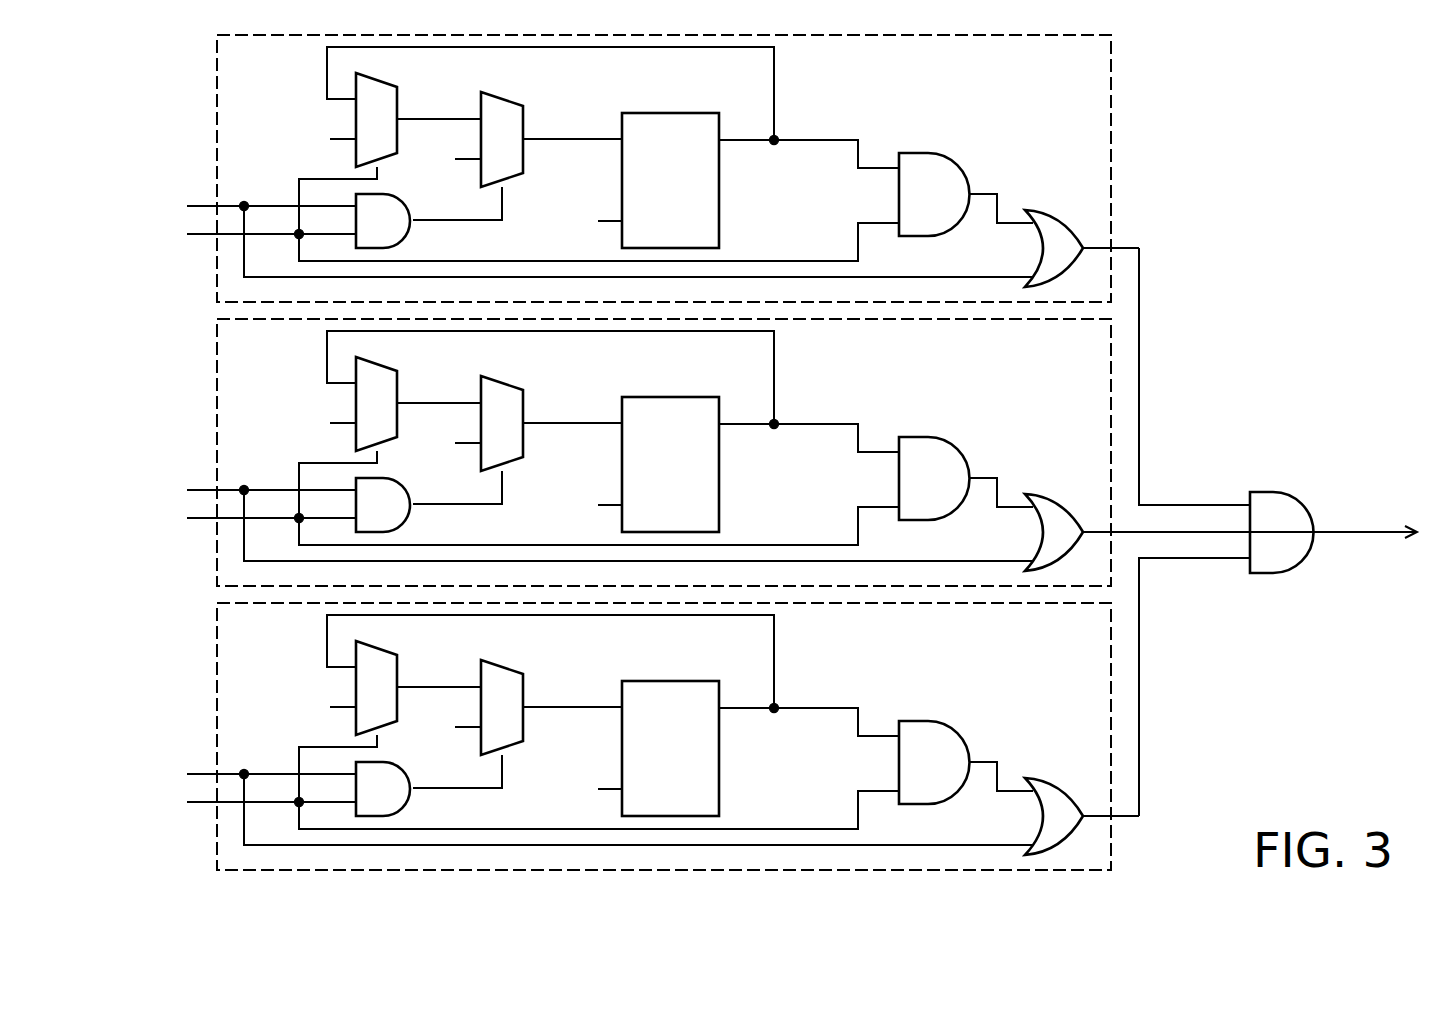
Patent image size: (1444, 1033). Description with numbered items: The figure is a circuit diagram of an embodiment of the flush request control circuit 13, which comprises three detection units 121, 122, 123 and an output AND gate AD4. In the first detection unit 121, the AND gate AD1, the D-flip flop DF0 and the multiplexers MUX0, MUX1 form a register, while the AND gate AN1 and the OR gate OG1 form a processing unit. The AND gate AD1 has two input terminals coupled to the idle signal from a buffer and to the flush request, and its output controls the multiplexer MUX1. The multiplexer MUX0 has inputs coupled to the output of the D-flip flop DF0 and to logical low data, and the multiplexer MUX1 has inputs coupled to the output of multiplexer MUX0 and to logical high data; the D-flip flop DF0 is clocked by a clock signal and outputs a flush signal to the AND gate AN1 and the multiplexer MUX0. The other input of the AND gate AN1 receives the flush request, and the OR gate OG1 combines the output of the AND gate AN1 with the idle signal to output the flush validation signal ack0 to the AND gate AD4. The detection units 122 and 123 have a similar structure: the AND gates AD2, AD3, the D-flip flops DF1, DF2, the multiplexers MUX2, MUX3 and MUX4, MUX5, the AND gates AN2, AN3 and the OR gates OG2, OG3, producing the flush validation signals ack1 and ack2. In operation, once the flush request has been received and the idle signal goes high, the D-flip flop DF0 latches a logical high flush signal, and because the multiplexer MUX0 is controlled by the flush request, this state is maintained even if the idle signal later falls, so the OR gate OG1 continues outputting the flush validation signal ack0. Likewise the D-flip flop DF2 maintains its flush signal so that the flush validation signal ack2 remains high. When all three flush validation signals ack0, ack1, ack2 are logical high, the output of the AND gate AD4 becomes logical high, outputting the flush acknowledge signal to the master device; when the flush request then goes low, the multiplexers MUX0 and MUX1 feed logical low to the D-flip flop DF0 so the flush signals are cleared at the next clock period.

The flush request control circuit 13 is at (1266, 746).
The detection unit 121 is at (1111, 168).
The detection unit 122 is at (1111, 383).
The detection unit 123 is at (1112, 733).
The multiplexer MUX0 is at (379, 78).
The multiplexer MUX1 is at (501, 98).
The multiplexer MUX2 is at (412, 393).
The multiplexer MUX3 is at (536, 413).
The multiplexer MUX4 is at (412, 677).
The multiplexer MUX5 is at (536, 697).
The D-flip flop DF0 is at (636, 113).
The D-flip flop DF1 is at (670, 447).
The D-flip flop DF2 is at (670, 731).
The AND gate AD1 is at (403, 240).
The AND gate AD2 is at (433, 508).
The AND gate AD3 is at (433, 792).
The AND gate AD4 is at (1263, 491).
The AND gate AN1 is at (899, 193).
The AND gate AN2 is at (884, 478).
The AND gate AN3 is at (884, 762).
The OR gate OG1 is at (1040, 248).
The OR gate OG2 is at (1012, 532).
The OR gate OG3 is at (1012, 816).
The flush validation signal ack0 is at (1220, 500).
The flush validation signal ack1 is at (1173, 528).
The flush validation signal ack2 is at (1195, 565).